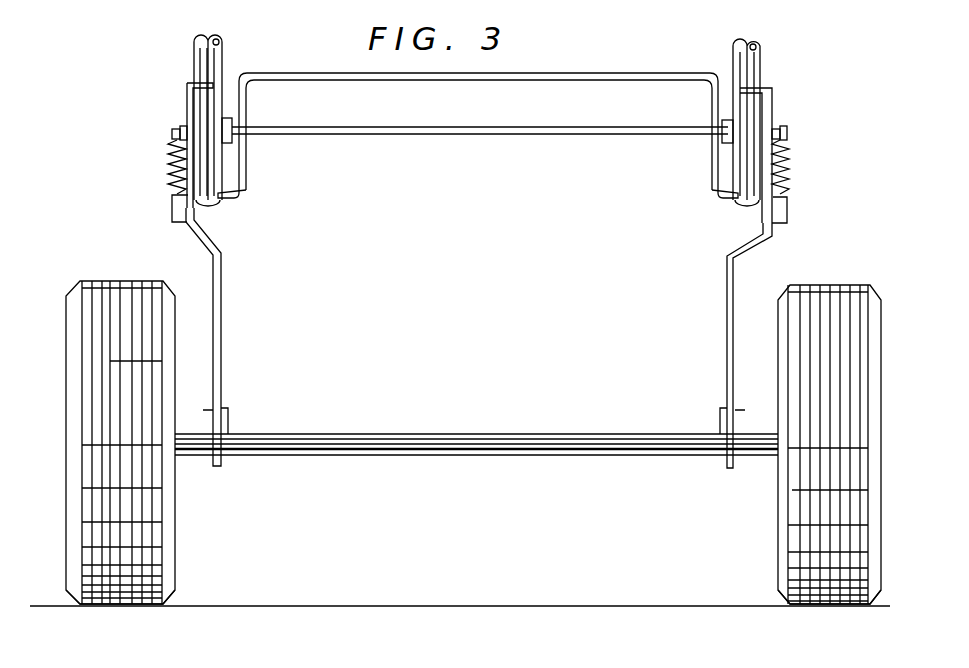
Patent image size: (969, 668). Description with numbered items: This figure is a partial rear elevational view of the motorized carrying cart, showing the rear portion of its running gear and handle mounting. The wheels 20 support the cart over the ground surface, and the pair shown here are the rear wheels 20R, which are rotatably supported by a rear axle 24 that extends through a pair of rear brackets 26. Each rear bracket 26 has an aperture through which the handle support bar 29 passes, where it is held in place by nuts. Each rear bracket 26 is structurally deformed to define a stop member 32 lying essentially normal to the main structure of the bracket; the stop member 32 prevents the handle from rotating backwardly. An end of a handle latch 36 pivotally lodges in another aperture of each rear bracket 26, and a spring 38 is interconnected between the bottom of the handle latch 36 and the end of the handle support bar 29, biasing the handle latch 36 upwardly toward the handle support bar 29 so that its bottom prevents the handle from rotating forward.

The wheels 20 is at (123, 327).
The rear wheels 20R is at (134, 558).
The rear axle 24 is at (462, 448).
The rear bracket 26 is at (226, 258).
The handle support bar 29 is at (592, 130).
The stop member 32 is at (196, 85).
The handle latch 36 is at (316, 75).
The spring 38 is at (167, 156).